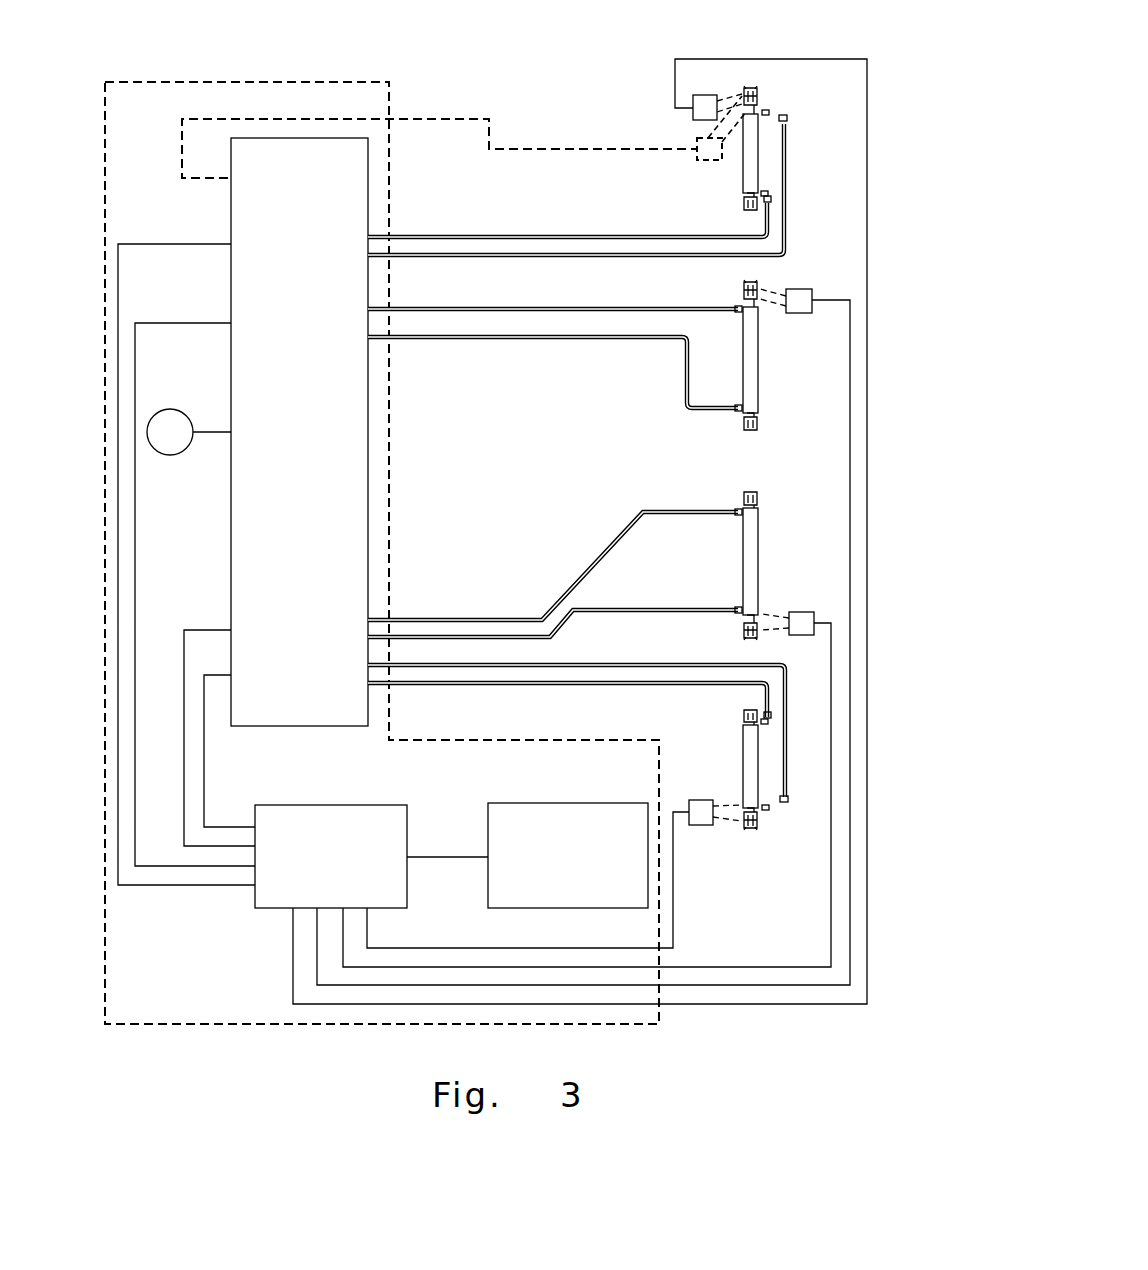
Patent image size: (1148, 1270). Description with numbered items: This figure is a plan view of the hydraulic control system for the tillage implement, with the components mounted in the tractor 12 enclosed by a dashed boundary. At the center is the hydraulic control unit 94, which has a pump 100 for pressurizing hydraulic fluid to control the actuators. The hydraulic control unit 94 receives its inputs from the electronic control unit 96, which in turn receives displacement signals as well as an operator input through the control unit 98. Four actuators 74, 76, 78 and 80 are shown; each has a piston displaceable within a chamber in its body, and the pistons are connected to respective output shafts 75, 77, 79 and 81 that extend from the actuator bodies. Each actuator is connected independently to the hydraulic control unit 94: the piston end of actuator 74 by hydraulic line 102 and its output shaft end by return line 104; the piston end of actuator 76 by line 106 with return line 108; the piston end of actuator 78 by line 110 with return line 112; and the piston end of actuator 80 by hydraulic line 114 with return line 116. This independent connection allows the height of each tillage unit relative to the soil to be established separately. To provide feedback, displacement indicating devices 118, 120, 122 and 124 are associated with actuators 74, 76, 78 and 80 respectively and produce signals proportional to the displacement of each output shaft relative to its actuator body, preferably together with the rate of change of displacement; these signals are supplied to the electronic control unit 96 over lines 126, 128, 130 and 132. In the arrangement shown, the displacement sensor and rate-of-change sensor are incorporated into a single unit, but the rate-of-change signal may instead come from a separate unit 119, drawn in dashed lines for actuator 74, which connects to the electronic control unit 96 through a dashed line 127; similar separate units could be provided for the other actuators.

The tractor 12 is at (189, 1025).
The actuator 74 is at (746, 175).
The output shaft 75 is at (757, 100).
The actuator 76 is at (760, 372).
The output shaft 77 is at (745, 292).
The actuator 78 is at (758, 548).
The output shaft 79 is at (745, 632).
The actuator 80 is at (744, 752).
The output shaft 81 is at (759, 825).
The hydraulic control unit 94 is at (322, 727).
The electronic control unit 96 is at (273, 908).
The operator input control unit 98 is at (515, 803).
The pump 100 is at (170, 456).
The hydraulic line 102 is at (473, 236).
The return line 104 is at (475, 257).
The line 106 is at (445, 339).
The return line 108 is at (608, 308).
The line 110 is at (620, 534).
The return line 112 is at (628, 609).
The hydraulic line 114 is at (560, 686).
The return line 116 is at (562, 664).
The displacement indicating device 118 is at (693, 106).
The separate unit 119 is at (697, 160).
The displacement indicating device 120 is at (805, 289).
The displacement indicating device 122 is at (799, 612).
The displacement indicating device 124 is at (706, 826).
The line 126 is at (847, 59).
The line 127 is at (529, 148).
The line 128 is at (850, 830).
The line 130 is at (831, 930).
The line 132 is at (490, 948).